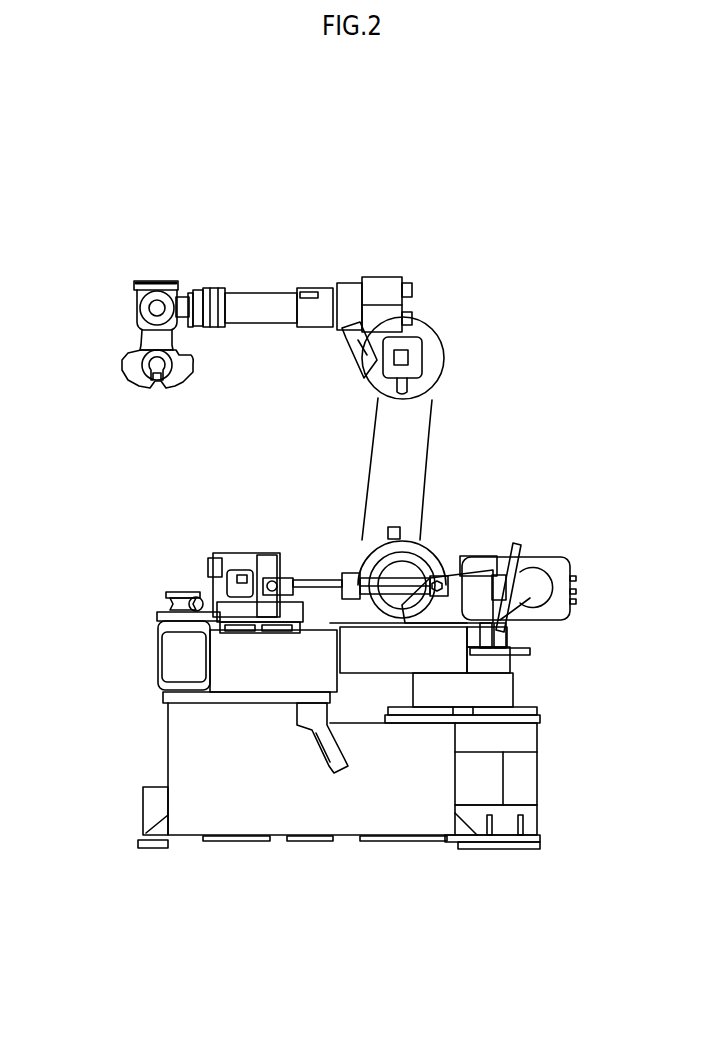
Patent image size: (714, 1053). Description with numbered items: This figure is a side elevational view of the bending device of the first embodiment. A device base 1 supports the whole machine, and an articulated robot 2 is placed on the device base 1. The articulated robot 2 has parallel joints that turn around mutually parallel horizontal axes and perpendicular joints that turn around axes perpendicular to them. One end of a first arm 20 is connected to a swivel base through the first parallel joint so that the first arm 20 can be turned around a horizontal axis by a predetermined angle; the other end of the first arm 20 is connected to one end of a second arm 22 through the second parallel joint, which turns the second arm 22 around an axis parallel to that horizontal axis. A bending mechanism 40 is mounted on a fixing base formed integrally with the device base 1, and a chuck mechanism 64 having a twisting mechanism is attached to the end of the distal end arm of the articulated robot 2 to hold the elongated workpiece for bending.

The device base 1 is at (350, 808).
The articulated robot 2 is at (463, 337).
The first arm 20 is at (410, 478).
The second arm 22 is at (258, 307).
The bending mechanism 40 is at (150, 604).
The chuck mechanism 64 is at (143, 393).